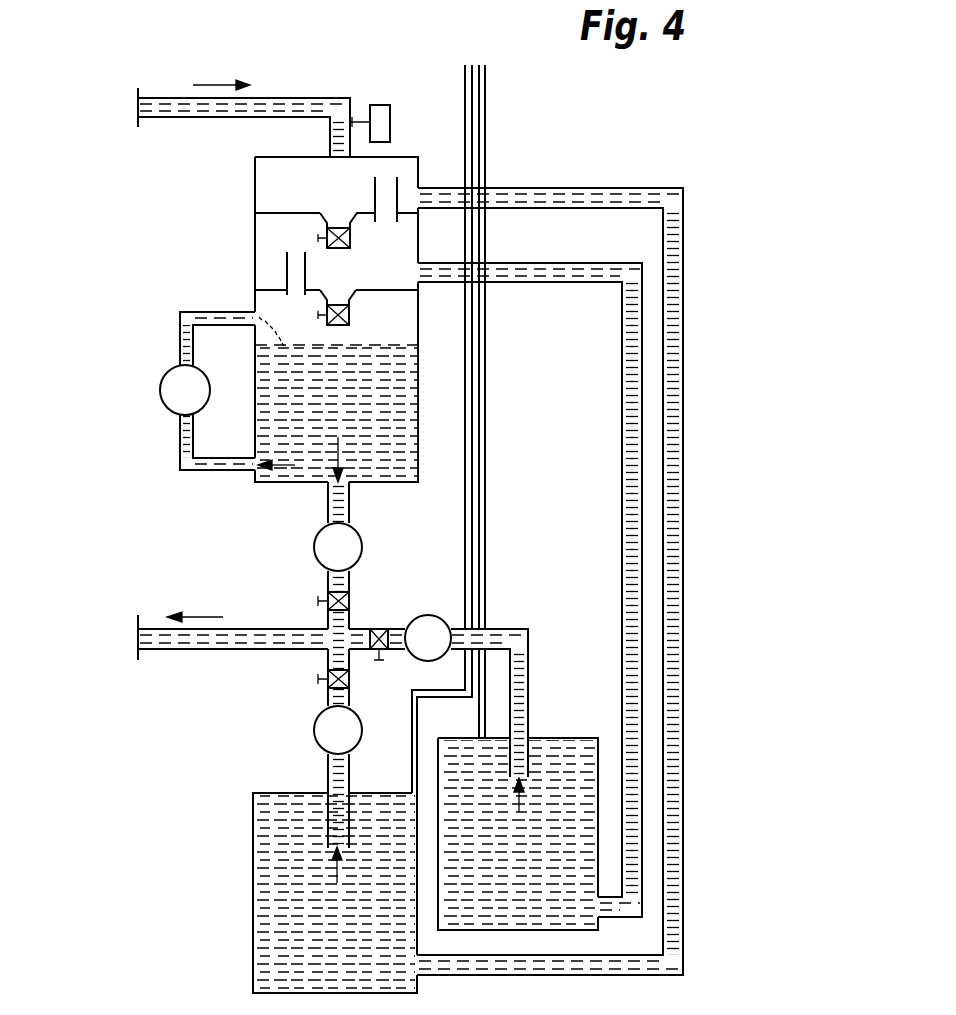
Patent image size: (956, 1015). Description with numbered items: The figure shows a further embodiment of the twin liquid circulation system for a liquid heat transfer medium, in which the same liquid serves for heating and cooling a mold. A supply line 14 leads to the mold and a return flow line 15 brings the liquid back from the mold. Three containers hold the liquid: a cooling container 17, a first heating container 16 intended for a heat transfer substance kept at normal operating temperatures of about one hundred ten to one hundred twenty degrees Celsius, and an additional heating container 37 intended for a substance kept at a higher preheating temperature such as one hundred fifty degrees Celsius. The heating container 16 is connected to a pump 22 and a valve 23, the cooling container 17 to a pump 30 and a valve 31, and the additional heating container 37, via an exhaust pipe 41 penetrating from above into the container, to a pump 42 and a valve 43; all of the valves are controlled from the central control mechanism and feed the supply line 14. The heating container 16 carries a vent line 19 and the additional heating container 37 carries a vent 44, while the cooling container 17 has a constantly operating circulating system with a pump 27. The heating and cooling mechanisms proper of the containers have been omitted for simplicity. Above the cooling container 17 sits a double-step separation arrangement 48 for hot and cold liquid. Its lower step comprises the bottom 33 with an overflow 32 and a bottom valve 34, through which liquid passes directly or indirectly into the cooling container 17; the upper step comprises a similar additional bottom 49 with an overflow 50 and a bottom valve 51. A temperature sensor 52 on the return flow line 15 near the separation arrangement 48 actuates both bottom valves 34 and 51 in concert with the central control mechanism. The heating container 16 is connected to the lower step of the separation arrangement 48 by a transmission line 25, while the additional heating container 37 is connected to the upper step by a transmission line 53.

The supply line 14 is at (178, 641).
The return flow line 15 is at (172, 110).
The heating container 16 is at (567, 752).
The cooling container 17 is at (300, 470).
The vent line 19 is at (486, 470).
The pump 22 is at (438, 608).
The valve 23 is at (383, 630).
The transmission line 25 is at (625, 405).
The pump 27 is at (160, 392).
The pump 30 is at (316, 548).
The valve 31 is at (350, 601).
The overflow 32 is at (287, 265).
The bottom 33 is at (362, 290).
The bottom valve 34 is at (349, 317).
The additional heating container 37 is at (253, 935).
The exhaust pipe 41 is at (350, 776).
The pump 42 is at (316, 734).
The valve 43 is at (326, 681).
The vent 44 is at (411, 708).
The double-step separation arrangement 48 is at (253, 218).
The additional bottom 49 is at (297, 212).
The overflow 50 is at (399, 178).
The bottom valve 51 is at (352, 238).
The temperature sensor 52 is at (384, 117).
The transmission line 53 is at (665, 565).